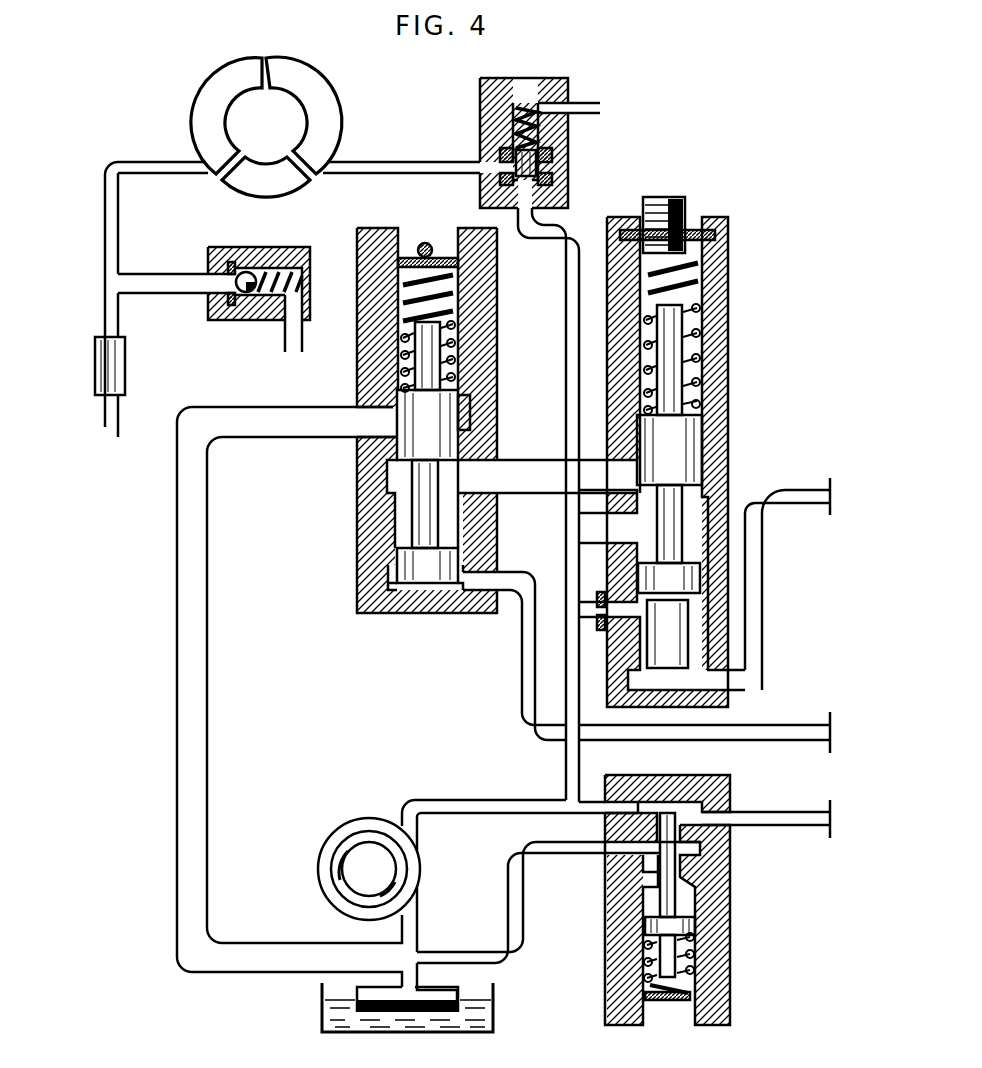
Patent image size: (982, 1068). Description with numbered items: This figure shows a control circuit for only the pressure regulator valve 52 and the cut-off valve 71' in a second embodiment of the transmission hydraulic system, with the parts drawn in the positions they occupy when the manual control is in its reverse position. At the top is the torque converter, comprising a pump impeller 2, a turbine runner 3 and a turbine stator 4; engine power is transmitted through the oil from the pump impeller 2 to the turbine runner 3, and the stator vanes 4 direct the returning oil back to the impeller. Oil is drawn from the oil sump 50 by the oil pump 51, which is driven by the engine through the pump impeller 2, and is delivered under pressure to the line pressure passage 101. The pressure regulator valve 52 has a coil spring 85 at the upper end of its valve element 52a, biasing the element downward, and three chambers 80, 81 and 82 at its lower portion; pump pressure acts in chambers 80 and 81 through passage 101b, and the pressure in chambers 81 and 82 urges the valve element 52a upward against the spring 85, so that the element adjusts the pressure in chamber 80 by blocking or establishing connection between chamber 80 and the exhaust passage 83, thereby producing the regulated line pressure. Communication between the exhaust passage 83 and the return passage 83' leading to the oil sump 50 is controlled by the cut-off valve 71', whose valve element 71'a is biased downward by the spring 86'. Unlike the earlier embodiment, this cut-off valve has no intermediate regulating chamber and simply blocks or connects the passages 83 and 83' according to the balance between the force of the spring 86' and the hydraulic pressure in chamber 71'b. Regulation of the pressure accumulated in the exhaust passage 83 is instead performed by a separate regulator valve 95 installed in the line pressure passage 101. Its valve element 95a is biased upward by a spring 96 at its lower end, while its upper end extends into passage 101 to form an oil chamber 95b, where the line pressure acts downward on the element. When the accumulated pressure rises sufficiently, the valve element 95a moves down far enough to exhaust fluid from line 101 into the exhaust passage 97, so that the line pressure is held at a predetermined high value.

The pump impeller 2 is at (310, 93).
The turbine runner 3 is at (222, 95).
The turbine stator 4 is at (252, 175).
The oil sump 50 is at (322, 1012).
The oil pump 51 is at (358, 828).
The pressure regulator valve 52 is at (706, 220).
The valve element 52a is at (656, 385).
The cut-off valve 71' is at (406, 430).
The valve element 71'a is at (402, 443).
The oil chamber 71'b is at (446, 611).
The oil chamber 80 is at (702, 532).
The oil chamber 81 is at (700, 612).
The oil chamber 82 is at (640, 672).
The exhaust passage 83 is at (547, 460).
The exhaust or return passage 83' is at (289, 697).
The coil spring 85 is at (650, 290).
The spring 86' is at (402, 317).
The regulator valve 95 is at (643, 895).
The valve element 95a is at (660, 898).
The oil chamber 95b is at (648, 812).
The spring 96 is at (648, 948).
The exhaust passage 97 is at (543, 855).
The line pressure passage 101 is at (765, 815).
The passage 101b is at (566, 760).